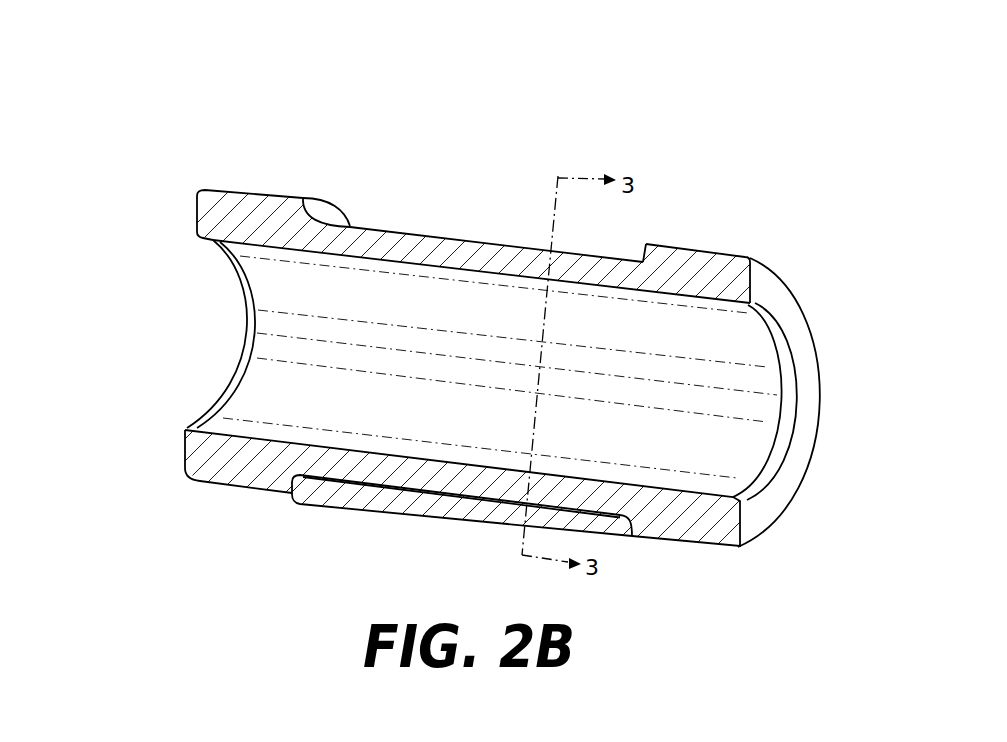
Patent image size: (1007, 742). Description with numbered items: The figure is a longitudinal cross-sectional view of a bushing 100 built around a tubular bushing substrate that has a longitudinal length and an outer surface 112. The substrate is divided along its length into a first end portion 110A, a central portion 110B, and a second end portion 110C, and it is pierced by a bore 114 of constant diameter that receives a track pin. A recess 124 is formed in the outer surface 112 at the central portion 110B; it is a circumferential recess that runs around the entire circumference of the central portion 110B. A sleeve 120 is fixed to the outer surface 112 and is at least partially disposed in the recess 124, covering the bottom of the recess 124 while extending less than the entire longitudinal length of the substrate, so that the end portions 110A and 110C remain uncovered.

The bushing 100 is at (158, 92).
The outer surface 112 is at (226, 188).
The first end portion 110A is at (283, 210).
The central portion 110B is at (487, 250).
The second end portion 110C is at (697, 263).
The recess 124 is at (643, 258).
The bore 114 is at (294, 373).
The sleeve 120 is at (412, 507).